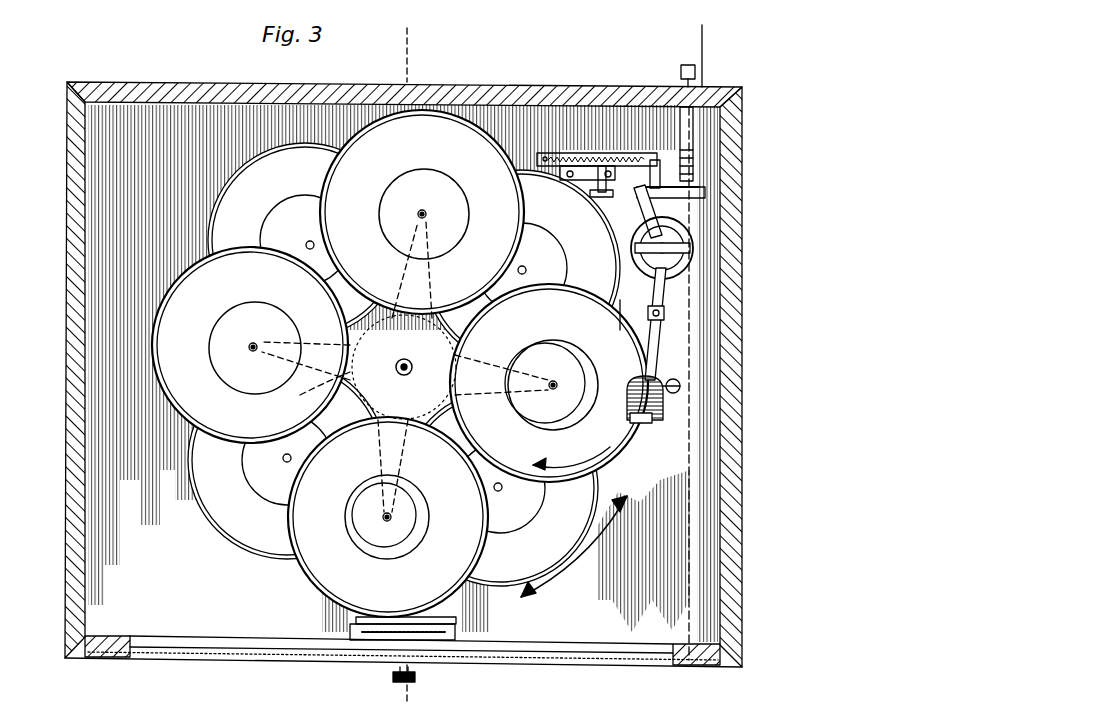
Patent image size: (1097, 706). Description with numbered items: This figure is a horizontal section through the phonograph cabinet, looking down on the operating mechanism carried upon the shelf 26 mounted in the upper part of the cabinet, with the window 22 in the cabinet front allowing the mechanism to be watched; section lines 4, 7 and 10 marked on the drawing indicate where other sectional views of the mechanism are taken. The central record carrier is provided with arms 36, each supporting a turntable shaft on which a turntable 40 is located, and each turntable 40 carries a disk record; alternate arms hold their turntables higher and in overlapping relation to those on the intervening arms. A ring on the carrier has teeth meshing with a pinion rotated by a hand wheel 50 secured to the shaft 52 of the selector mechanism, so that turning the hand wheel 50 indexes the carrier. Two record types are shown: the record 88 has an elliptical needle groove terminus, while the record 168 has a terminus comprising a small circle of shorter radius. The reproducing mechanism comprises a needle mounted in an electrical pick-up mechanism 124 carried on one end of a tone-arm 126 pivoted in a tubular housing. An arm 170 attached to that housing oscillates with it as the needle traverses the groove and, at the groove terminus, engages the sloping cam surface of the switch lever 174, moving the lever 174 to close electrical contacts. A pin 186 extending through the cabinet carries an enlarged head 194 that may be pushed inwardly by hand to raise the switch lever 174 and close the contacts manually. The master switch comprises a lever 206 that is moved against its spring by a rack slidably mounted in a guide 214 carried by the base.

The section line 4- 4 is at (518, 628).
The section line 7- 7 is at (383, 60).
The section line 10- 10 is at (690, 45).
The window 22 is at (596, 658).
The shelf 26 is at (667, 636).
The arms 36 is at (330, 392).
The turntable 40 is at (187, 422).
The hand wheel 50 is at (393, 676).
The shaft 52 is at (425, 589).
The record 88 is at (612, 462).
The electrical pick-up mechanism 124 is at (686, 393).
The tone-arm 126 is at (652, 356).
The record 168 is at (330, 575).
The arm 170 is at (636, 206).
The switch lever 174 is at (668, 184).
The pin 186 is at (685, 123).
The enlarged head 194 is at (681, 70).
The lever 206 is at (655, 172).
The guide 214 is at (590, 153).